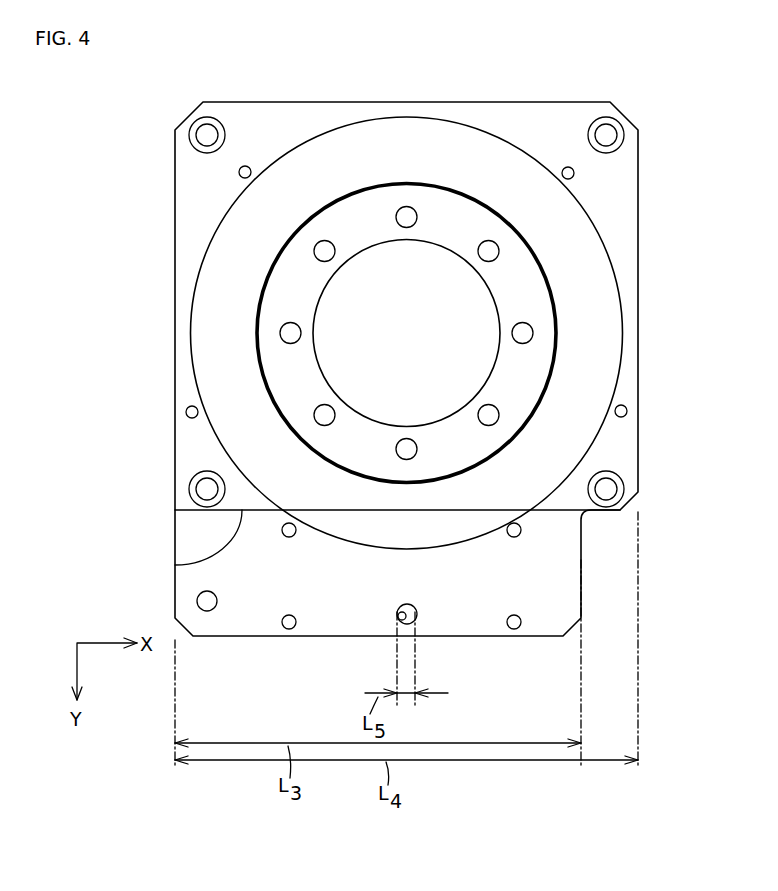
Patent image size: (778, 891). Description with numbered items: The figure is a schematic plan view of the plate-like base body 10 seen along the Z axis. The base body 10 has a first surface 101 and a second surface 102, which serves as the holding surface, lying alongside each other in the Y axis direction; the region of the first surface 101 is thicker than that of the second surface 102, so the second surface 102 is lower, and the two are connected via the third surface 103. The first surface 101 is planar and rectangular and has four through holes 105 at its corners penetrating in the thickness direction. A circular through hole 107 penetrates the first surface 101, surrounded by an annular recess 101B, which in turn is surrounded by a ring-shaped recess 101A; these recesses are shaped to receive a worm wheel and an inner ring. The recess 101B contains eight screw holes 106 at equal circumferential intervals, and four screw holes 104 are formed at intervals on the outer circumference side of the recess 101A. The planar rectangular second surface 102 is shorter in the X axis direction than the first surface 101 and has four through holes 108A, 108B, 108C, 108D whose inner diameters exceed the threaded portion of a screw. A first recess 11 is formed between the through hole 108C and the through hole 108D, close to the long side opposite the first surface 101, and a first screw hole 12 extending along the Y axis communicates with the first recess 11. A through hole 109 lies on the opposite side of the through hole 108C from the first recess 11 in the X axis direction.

The base body 10 is at (175, 152).
The first recess 11 is at (397, 623).
The first screw hole 12 is at (407, 626).
The first surface 101 is at (178, 497).
The ring-shaped recess 101A is at (280, 195).
The annular recess 101B is at (357, 220).
The second surface 102 is at (185, 543).
The third surface 103 is at (200, 563).
The screw holes 104 is at (245, 165).
The through holes 105 is at (196, 118).
The screw holes 106 is at (407, 205).
The through hole 107 is at (345, 297).
The through hole 108A is at (280, 537).
The through hole 108B is at (521, 532).
The through hole 108C is at (289, 630).
The through hole 108D is at (514, 630).
The through hole 109 is at (197, 601).